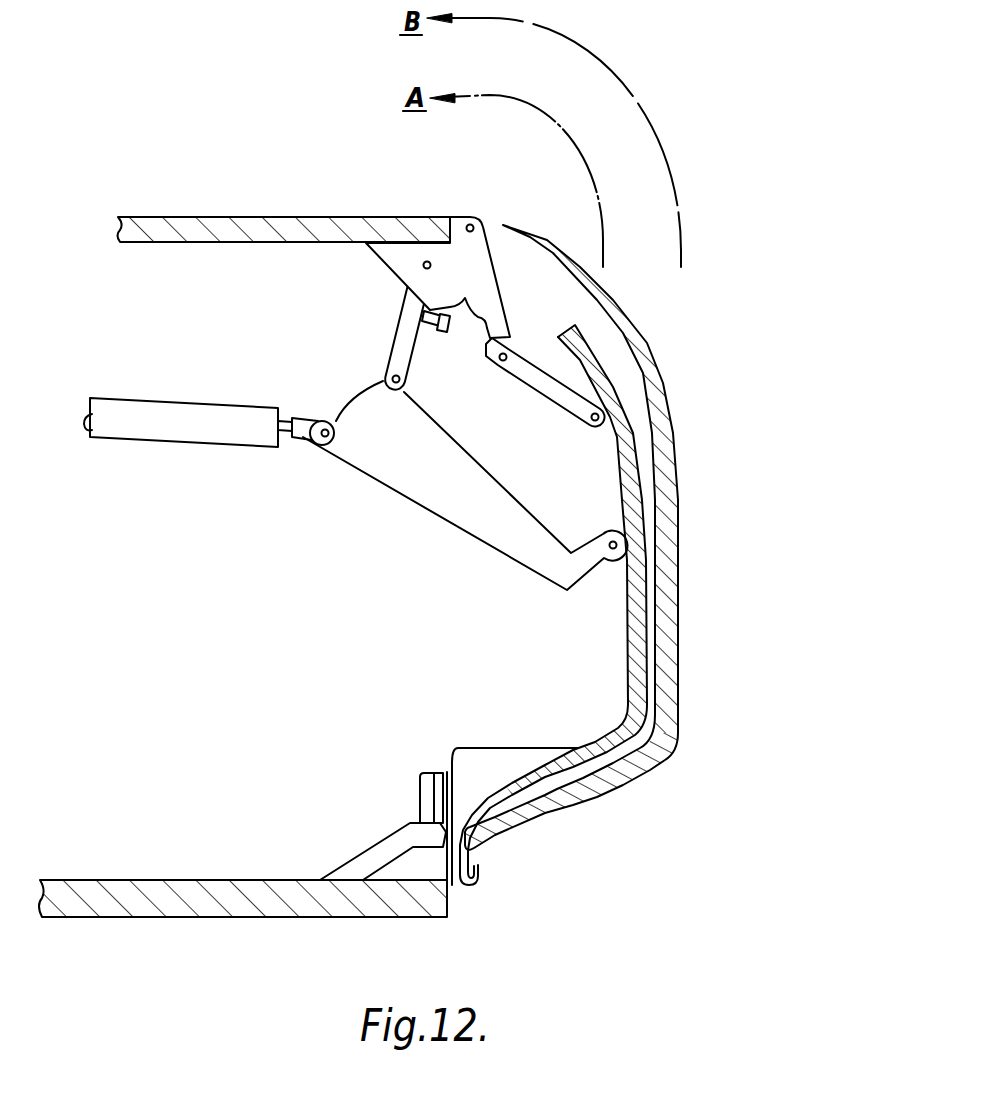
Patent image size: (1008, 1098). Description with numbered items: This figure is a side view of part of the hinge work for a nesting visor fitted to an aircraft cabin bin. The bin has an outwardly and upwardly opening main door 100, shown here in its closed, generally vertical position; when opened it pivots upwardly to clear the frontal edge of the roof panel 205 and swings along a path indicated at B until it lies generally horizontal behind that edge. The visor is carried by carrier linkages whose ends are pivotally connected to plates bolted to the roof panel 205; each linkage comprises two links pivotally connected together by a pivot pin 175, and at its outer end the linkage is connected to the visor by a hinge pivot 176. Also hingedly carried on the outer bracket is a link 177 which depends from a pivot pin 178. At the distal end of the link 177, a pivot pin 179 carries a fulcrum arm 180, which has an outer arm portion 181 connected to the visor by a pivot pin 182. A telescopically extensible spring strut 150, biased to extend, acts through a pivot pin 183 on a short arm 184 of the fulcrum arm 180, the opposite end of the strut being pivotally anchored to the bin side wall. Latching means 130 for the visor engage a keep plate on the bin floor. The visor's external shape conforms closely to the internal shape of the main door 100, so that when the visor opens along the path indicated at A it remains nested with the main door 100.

The main door 100 is at (597, 792).
The latching means 130 is at (410, 786).
The spring strut 150 is at (107, 402).
The pivot pin 175 is at (500, 362).
The hinge pivot 176 is at (590, 421).
The link 177 is at (399, 326).
The pivot pin 178 is at (423, 266).
The pivot pin 179 is at (393, 393).
The fulcrum arm 180 is at (455, 520).
The outer arm portion 181 is at (586, 590).
The pivot pin 182 is at (620, 544).
The pivot pin 183 is at (320, 446).
The short arm 184 is at (336, 420).
The roof panel 205 is at (141, 216).